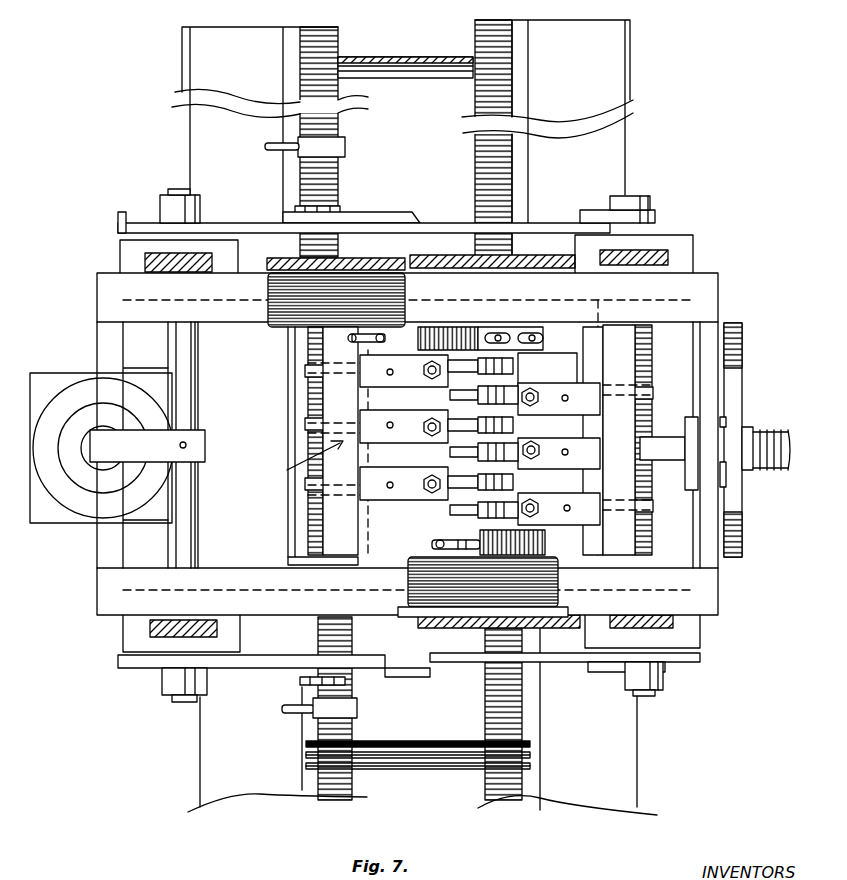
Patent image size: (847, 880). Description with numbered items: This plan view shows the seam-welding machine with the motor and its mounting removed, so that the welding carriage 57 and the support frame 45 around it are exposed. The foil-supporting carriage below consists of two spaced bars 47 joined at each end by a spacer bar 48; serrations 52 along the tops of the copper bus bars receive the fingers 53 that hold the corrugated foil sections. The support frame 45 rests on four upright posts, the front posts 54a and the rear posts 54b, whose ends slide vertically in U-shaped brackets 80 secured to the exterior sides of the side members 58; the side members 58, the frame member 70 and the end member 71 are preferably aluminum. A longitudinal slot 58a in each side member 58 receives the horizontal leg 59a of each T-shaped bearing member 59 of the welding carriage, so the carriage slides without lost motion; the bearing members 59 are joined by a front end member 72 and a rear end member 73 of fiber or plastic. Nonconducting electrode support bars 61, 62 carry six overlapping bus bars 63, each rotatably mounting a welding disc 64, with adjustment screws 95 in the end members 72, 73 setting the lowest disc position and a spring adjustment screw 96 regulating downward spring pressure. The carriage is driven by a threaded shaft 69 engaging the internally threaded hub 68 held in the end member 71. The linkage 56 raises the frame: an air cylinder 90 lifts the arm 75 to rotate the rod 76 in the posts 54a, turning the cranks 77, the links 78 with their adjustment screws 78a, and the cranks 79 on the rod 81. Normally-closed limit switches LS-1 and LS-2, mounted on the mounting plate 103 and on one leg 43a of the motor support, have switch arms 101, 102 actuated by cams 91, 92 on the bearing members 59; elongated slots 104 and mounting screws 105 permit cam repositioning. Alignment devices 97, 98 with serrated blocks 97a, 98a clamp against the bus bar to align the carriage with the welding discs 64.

The legs of motor support 43a is at (538, 256).
The support frame 45 is at (104, 322).
The spaced bars 47 is at (290, 65).
The spacer bar 48 is at (446, 60).
The serrations 52 is at (488, 720).
The fingers 53 is at (306, 766).
The front posts 54a is at (160, 262).
The rear posts 54b is at (665, 250).
The linkage 56 is at (154, 688).
The welding carriage 57 is at (325, 451).
The side members 58 is at (215, 290).
The longitudinal slot 58a is at (290, 578).
The bearing members 59 is at (583, 333).
The leg of T 59a is at (560, 305).
The electrode support bar 61 is at (362, 399).
The electrode support bar 62 is at (583, 368).
The bus bars 63 is at (398, 432).
The welding disc 64 is at (455, 395).
The hub 68 is at (690, 478).
The threaded shaft 69 is at (760, 433).
The frame member 70 is at (117, 363).
The end member of support frame 71 is at (712, 311).
The front end member 72 is at (338, 517).
The rear end member 73 is at (622, 431).
The arm 75 is at (140, 462).
The rod 76 is at (190, 505).
The cranks 77 is at (162, 209).
The links 78 is at (258, 226).
The adjustment screws 78a is at (322, 207).
The cranks 79 is at (605, 211).
The U-shaped brackets 80 is at (693, 253).
The rod 81 is at (690, 637).
The air cylinder 90 is at (85, 408).
The cam 91 is at (470, 327).
The cam 92 is at (545, 549).
The adjustment screws 95 is at (310, 422).
The spring adjustment screw 96 is at (428, 485).
The alignment device 97 is at (281, 145).
The block 97a is at (345, 148).
The alignment device 98 is at (283, 709).
The block 98a is at (357, 712).
The switch arm 101 is at (356, 343).
The switch arm 102 is at (450, 512).
The mounting plate 103 is at (352, 266).
The elongated slots 104 is at (530, 333).
The mounting screws 105 is at (497, 333).
The limit switch LS-1 is at (365, 284).
The limit switch LS-2 is at (570, 598).